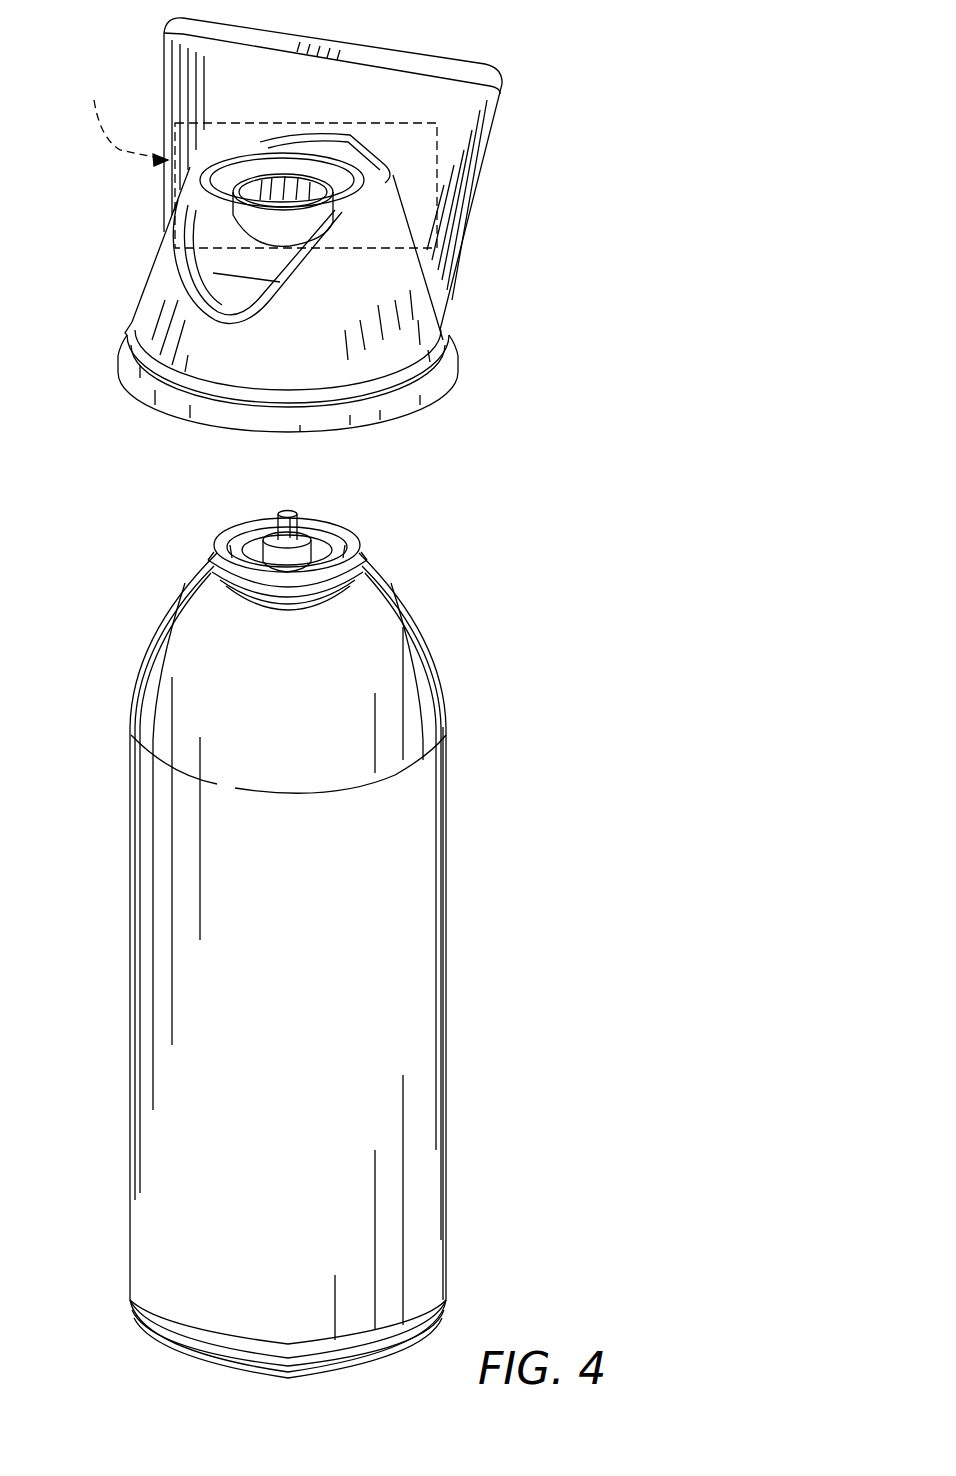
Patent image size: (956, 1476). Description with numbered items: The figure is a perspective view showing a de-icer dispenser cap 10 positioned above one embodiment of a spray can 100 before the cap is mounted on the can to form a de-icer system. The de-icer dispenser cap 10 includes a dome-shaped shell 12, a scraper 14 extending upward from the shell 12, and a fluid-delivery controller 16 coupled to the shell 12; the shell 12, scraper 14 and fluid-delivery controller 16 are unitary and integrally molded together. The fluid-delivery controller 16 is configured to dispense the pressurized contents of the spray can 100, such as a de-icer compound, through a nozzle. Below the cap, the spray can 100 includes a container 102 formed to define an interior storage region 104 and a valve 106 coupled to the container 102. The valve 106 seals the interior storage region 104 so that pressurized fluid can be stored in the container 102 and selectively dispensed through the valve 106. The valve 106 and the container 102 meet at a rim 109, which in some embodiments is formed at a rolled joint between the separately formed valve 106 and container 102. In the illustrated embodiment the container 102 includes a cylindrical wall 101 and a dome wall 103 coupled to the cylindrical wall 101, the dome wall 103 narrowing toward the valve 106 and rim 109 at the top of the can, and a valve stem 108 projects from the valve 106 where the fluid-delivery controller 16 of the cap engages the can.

The de-icer dispenser cap 10 is at (371, 225).
The dome-shaped shell 12 is at (430, 370).
The scraper 14 is at (508, 78).
The fluid-delivery controller 16 is at (255, 182).
The spray can 100 is at (386, 914).
The cylindrical wall 101 is at (391, 1052).
The container 102 is at (465, 887).
The dome wall 103 is at (433, 640).
The interior storage region 104 is at (338, 1008).
The valve 106 is at (318, 548).
The valve stem 108 is at (283, 512).
The rim 109 is at (218, 545).